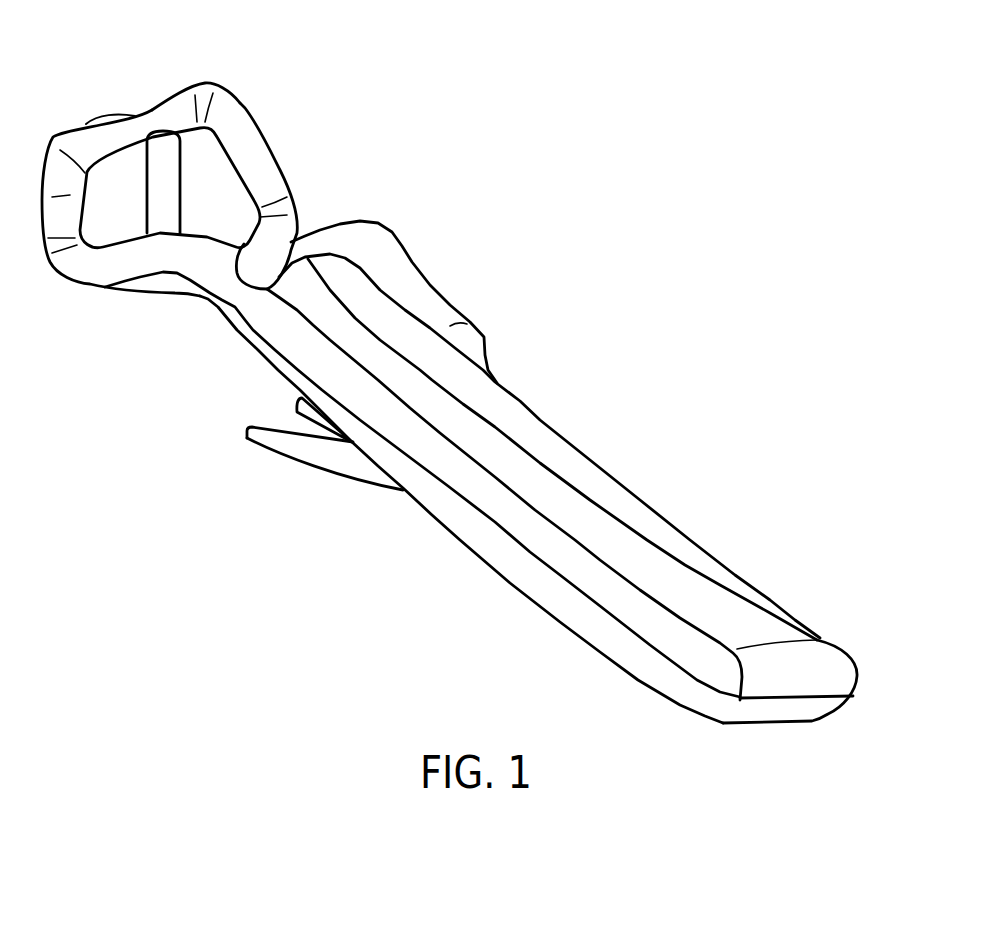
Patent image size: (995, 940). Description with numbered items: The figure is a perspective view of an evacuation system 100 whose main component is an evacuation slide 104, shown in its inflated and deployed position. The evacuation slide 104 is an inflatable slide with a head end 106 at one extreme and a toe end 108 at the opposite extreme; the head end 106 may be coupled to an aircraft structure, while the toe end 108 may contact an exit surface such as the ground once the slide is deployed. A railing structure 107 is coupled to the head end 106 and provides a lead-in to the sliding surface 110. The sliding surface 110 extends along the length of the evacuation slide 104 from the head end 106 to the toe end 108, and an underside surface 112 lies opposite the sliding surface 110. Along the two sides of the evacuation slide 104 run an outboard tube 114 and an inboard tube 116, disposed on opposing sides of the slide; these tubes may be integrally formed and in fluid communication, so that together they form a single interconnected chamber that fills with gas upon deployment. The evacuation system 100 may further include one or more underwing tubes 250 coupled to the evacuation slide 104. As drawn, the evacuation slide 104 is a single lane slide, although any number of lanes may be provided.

The evacuation system 100 is at (389, 67).
The evacuation slide 104 is at (152, 83).
The head end 106 is at (283, 278).
The railing structure 107 is at (222, 110).
The toe end 108 is at (818, 703).
The sliding surface 110 is at (471, 506).
The underside surface 112 is at (450, 552).
The outboard tube 114 is at (293, 353).
The inboard tube 116 is at (562, 460).
The underwing tube 250 is at (287, 452).